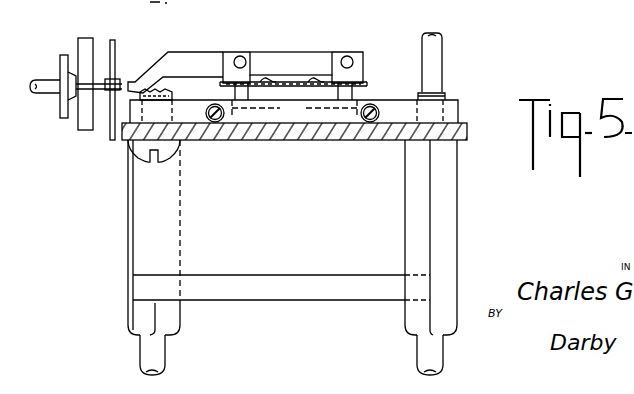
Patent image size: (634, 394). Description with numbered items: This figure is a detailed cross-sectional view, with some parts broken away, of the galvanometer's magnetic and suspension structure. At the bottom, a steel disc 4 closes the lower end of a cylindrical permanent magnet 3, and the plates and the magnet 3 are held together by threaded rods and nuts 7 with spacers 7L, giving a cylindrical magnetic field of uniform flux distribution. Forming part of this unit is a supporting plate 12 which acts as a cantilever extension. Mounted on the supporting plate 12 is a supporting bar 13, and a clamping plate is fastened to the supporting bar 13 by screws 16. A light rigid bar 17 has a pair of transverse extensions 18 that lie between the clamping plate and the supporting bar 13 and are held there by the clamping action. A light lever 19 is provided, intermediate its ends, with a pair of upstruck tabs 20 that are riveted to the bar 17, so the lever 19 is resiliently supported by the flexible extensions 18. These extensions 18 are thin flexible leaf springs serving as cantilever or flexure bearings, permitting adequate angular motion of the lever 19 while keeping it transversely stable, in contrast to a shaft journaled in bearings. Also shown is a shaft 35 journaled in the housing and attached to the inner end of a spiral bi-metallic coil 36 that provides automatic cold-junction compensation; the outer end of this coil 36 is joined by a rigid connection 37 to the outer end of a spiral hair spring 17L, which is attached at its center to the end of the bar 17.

The cylindrical permanent magnet 3 is at (302, 212).
The steel disc 4 is at (248, 301).
The threaded rods and nuts 7 is at (158, 365).
The spacers 7L is at (469, 278).
The supporting plate 12 is at (327, 140).
The supporting bar 13 is at (454, 111).
The screws 16 is at (215, 122).
The light rigid bar 17 is at (289, 60).
The spiral hair spring 17L is at (175, 63).
The transverse extensions 18 is at (294, 112).
The light lever 19 is at (366, 88).
The upstruck tabs 20 is at (238, 53).
The shaft 35 is at (44, 93).
The spiral bi-metallic coil 36 is at (84, 132).
The rigid connection 37 is at (97, 80).